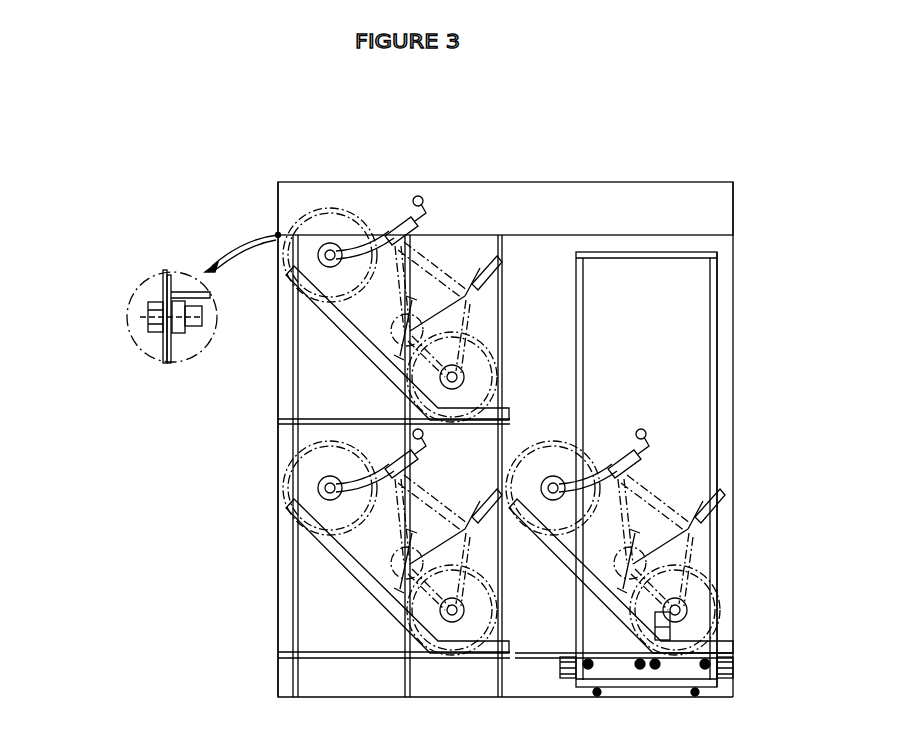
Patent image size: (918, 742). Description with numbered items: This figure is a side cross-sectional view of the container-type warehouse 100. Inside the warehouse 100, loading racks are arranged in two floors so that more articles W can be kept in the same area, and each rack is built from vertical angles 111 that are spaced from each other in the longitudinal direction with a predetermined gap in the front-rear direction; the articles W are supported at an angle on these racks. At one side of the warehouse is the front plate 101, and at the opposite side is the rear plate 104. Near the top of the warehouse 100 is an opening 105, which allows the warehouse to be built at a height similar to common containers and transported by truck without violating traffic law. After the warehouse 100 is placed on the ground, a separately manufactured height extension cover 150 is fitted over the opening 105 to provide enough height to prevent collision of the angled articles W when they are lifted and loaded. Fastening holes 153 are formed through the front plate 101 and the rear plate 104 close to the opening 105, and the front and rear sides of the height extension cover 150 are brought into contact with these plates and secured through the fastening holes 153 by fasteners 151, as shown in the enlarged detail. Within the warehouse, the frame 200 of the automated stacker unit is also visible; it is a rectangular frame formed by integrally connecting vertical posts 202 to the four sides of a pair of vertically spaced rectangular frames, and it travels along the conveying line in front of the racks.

The warehouse 100 is at (444, 404).
The front plate 101 is at (733, 395).
The rear plate 104 is at (278, 535).
The opening 105 is at (192, 298).
The vertical angles 111 is at (296, 606).
The height extension cover 150 is at (588, 181).
The fasteners 151 is at (152, 318).
The fastening holes 153 is at (160, 332).
The frame 200 is at (716, 439).
The vertical posts 202 is at (713, 347).
The articles W is at (667, 487).